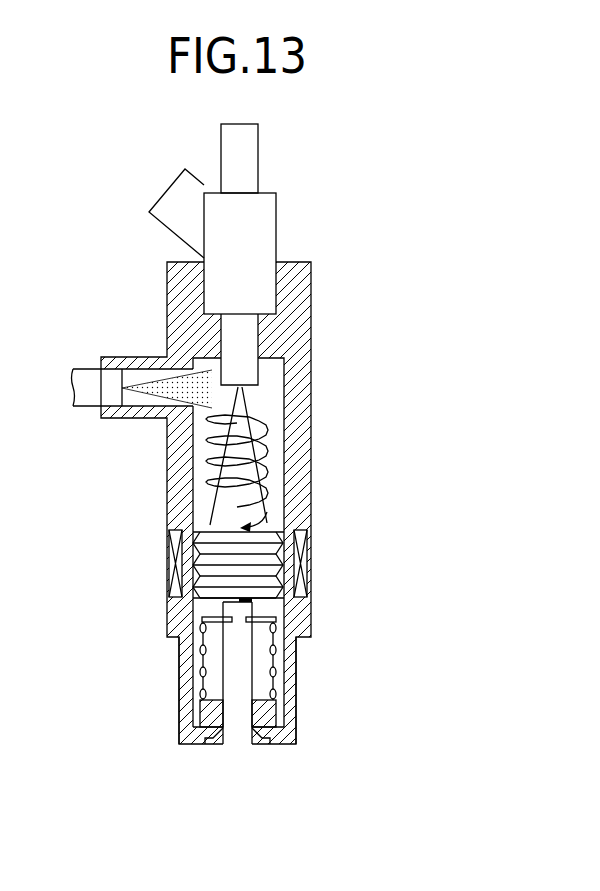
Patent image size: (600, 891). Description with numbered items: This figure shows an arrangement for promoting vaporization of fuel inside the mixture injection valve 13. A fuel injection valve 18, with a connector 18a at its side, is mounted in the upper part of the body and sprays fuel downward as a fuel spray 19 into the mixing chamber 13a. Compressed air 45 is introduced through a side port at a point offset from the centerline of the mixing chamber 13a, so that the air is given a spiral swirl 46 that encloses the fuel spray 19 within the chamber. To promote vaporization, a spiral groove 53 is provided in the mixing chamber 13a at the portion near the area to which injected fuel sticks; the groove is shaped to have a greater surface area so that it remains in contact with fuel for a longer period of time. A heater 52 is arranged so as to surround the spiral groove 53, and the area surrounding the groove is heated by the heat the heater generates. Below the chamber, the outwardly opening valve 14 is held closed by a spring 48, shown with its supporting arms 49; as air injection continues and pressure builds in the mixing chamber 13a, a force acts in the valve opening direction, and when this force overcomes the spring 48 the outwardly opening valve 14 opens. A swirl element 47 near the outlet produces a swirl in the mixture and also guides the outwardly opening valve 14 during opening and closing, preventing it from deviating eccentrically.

The mixture injection valve 13 is at (290, 318).
The mixing chamber 13a is at (268, 610).
The outwardly opening valve 14 is at (238, 725).
The fuel injection valve 18 is at (262, 222).
The injector connector 18a is at (183, 193).
The fuel spray 19 is at (240, 415).
The air 45 is at (172, 393).
The swirl flow 46 is at (262, 467).
The swirl element 47 is at (272, 710).
The spring 48 is at (190, 675).
The support arms with chains 49 is at (207, 612).
The heater 52 is at (300, 537).
The spiral groove 53 is at (257, 570).